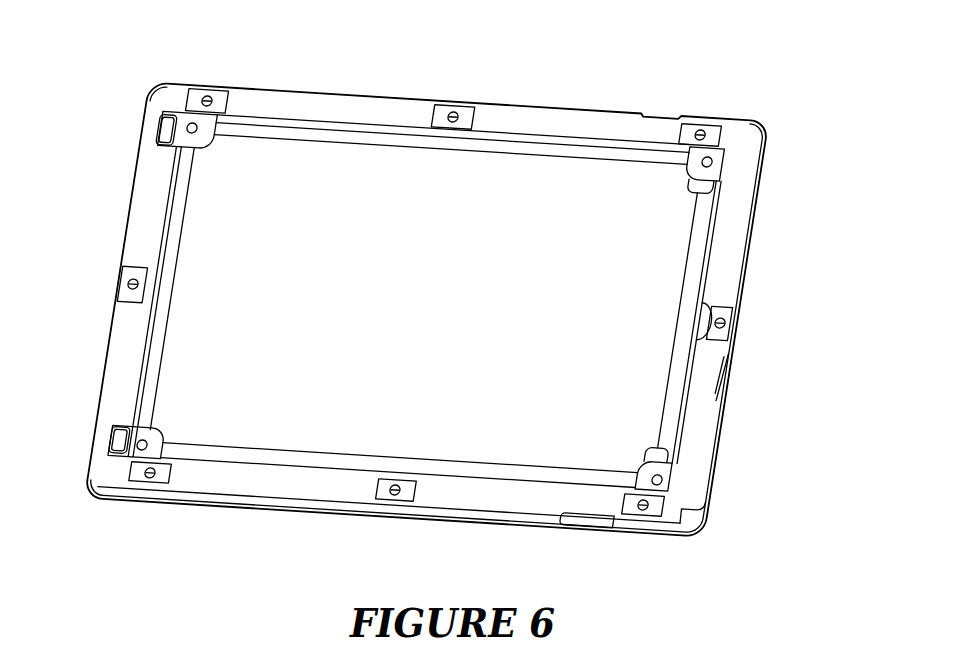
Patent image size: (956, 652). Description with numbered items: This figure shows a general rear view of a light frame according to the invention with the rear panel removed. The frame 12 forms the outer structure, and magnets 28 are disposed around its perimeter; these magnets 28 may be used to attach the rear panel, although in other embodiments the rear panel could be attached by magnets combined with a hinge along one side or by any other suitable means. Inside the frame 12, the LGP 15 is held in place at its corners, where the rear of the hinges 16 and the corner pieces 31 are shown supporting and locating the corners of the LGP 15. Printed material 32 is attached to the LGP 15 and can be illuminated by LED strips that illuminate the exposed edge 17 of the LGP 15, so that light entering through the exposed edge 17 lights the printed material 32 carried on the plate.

The frame 12 is at (641, 115).
The LGP 15 is at (352, 135).
The exposed edge 17 is at (278, 118).
The hinges 16 is at (160, 147).
The corner pieces 31 is at (722, 181).
The magnets 28 is at (740, 304).
The printed material 32 is at (424, 303).